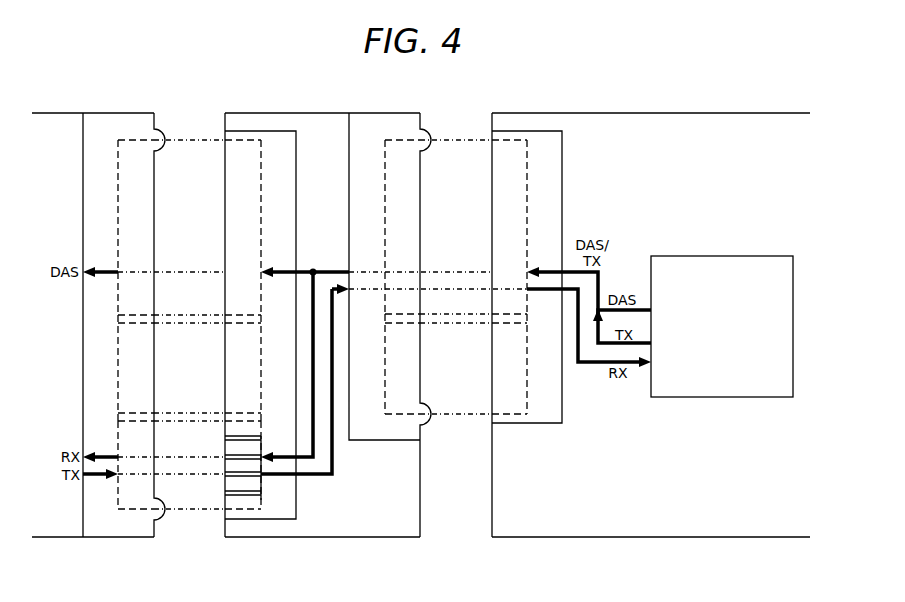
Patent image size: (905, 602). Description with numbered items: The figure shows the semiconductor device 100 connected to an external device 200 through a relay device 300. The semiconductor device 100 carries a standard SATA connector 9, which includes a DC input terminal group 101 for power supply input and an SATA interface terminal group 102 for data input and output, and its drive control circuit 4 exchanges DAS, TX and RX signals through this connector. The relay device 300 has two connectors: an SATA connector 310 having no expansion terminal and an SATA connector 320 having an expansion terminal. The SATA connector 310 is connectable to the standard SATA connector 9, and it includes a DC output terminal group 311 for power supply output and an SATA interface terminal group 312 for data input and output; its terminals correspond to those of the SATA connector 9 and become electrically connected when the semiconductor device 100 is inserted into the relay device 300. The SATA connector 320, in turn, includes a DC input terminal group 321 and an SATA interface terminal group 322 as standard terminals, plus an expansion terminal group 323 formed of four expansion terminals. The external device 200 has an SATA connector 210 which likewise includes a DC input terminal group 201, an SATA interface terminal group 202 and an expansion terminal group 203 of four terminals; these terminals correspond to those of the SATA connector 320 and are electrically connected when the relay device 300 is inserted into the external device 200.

The external device 200 is at (58, 113).
The SATA connector of external device 210 is at (120, 120).
The DC input terminal group 201 is at (147, 226).
The SATA interface terminal group 202 is at (147, 377).
The expansion terminal group 203 is at (138, 512).
The relay device 300 is at (325, 113).
The SATA connector (third connector) having expansion terminal 320 is at (262, 131).
The DC input terminal group 321 is at (232, 173).
The SATA interface terminal group 322 is at (232, 340).
The expansion terminal group 323 is at (244, 512).
The SATA connector (second connector) having no expansion terminal 310 is at (388, 122).
The DC output terminal group (third terminal group) 311 is at (413, 226).
The SATA interface terminal group (fourth terminal group) 312 is at (413, 377).
The semiconductor device 100 is at (655, 113).
The SATA connector (first connector) 9 is at (529, 131).
The DC input terminal group 101 is at (500, 173).
The SATA interface terminal group 102 is at (500, 340).
The drive control circuit 4 is at (724, 256).